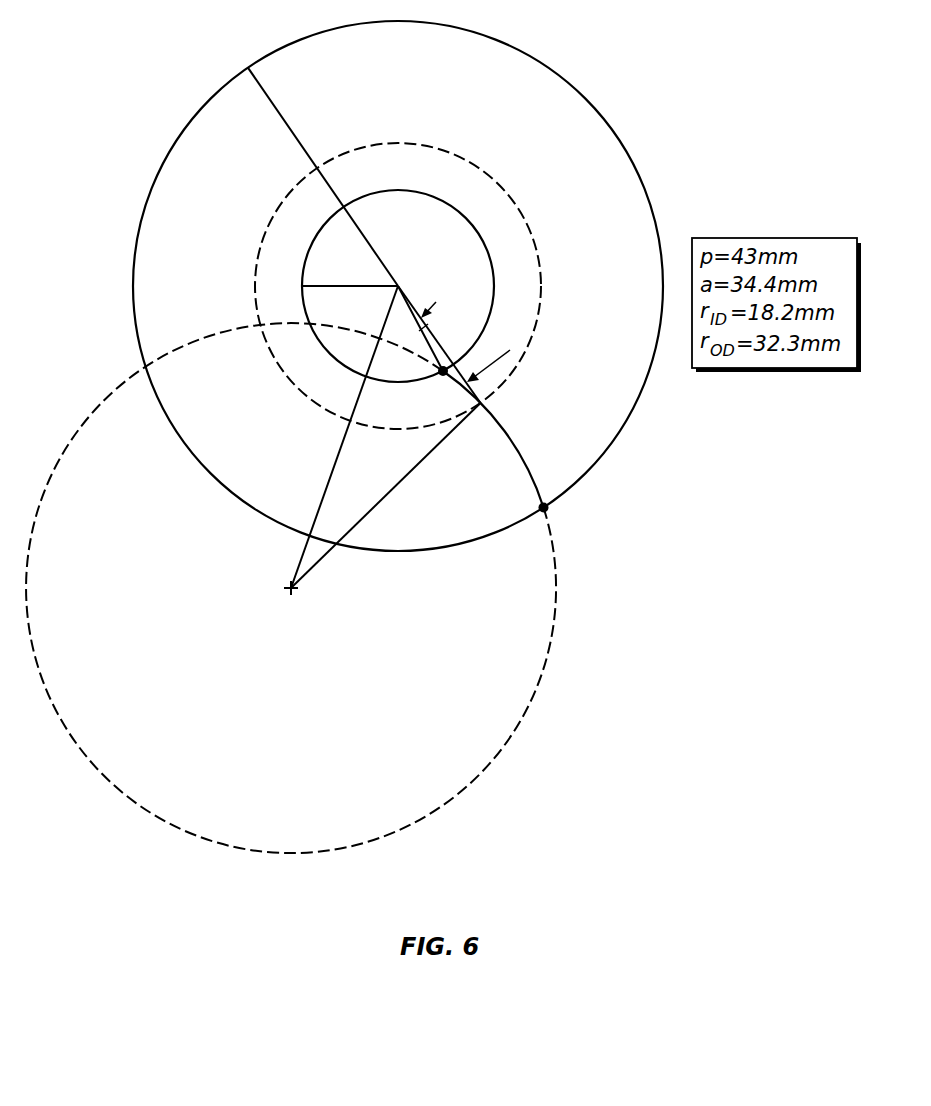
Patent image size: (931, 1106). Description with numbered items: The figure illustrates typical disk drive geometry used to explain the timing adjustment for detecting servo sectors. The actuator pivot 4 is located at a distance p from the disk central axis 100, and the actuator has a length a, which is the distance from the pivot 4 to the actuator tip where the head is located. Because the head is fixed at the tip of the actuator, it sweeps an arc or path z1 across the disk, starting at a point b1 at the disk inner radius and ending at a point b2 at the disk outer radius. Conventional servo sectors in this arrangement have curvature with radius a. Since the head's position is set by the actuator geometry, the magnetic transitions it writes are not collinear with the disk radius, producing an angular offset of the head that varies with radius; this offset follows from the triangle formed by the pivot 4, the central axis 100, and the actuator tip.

The disk central axis 100 is at (401, 283).
The pivot 4 is at (288, 593).
The point at disk inner radius b1 is at (418, 334).
The point at disk outer radius b2 is at (561, 518).
The arc or path z1 is at (497, 439).